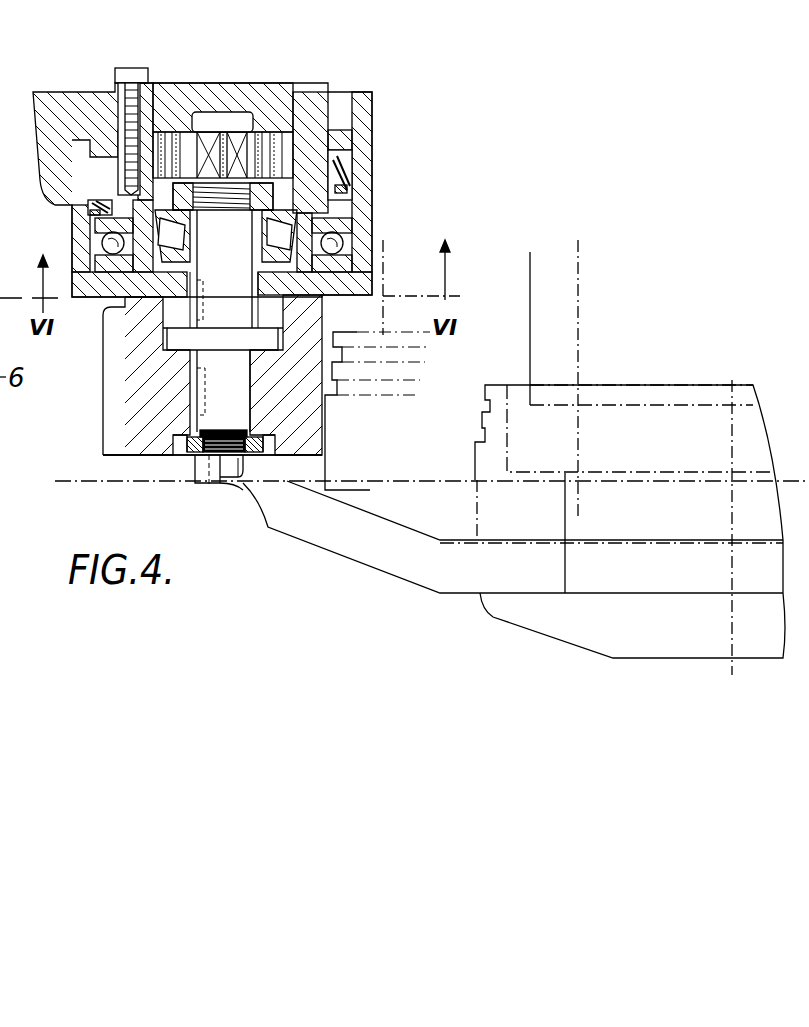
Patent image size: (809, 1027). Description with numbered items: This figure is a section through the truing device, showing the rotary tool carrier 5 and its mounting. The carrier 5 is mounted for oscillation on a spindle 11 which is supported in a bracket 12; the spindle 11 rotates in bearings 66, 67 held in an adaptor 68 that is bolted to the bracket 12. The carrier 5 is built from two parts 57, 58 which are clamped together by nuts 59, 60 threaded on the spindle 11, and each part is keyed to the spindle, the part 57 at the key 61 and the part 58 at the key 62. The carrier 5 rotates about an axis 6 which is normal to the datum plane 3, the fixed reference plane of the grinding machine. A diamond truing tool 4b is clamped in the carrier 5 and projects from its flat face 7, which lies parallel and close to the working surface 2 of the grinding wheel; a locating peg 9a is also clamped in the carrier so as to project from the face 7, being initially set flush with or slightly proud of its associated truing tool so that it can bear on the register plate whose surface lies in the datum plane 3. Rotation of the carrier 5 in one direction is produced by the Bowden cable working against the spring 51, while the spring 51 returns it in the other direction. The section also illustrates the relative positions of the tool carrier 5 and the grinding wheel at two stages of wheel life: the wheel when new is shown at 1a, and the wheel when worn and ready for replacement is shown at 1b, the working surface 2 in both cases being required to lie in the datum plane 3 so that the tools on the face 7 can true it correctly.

The bracket 12 is at (57, 98).
The spring 51 is at (187, 140).
The adaptor 68 is at (108, 212).
The bearing 67 is at (105, 243).
The carrier part 58 is at (366, 232).
The nut 60 is at (252, 205).
The bearing 66 is at (262, 233).
The key 62 is at (202, 310).
The carrier part 57 is at (106, 390).
The spindle 11 is at (238, 372).
The key 61 is at (208, 408).
The flat face 7 is at (150, 456).
The nut 59 is at (195, 458).
The axis 6 is at (226, 488).
The locating peg 9a is at (228, 478).
The diamond truing tool 4b is at (240, 471).
The working surface 2 is at (287, 480).
The grinding wheel (ready for replacement) 1b is at (370, 487).
The grinding wheel (new) 1a is at (400, 523).
The datum plane 3 is at (533, 487).
The rotary tool carrier 5 is at (98, 308).